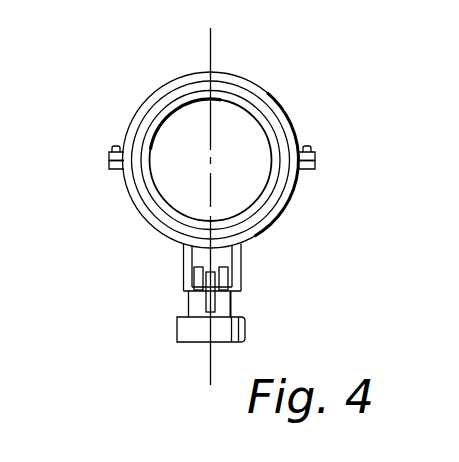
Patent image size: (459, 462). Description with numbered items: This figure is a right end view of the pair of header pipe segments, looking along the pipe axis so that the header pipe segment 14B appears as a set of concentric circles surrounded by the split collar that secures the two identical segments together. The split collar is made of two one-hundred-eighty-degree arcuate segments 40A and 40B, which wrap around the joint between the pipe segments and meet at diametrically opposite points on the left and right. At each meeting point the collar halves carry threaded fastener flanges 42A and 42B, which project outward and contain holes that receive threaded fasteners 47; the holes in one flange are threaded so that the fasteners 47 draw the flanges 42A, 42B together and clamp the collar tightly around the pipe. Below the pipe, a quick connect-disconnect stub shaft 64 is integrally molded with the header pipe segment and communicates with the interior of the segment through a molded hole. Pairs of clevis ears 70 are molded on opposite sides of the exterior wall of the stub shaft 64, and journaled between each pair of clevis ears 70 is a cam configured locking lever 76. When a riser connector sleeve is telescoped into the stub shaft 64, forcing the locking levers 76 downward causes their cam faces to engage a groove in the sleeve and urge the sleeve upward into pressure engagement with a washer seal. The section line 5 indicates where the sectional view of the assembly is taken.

The section line 5- 5 is at (210, 28).
The header pipe segment 14B is at (277, 100).
The arcuate segment 40A is at (246, 72).
The arcuate segment 40B is at (286, 203).
The threaded fastener flange 42A is at (111, 153).
The threaded fastener flange 42B is at (115, 170).
The threaded fastener 47 is at (114, 147).
The stub shaft 64 is at (242, 265).
The clevis ears 70 is at (193, 278).
The locking lever 76 is at (221, 307).